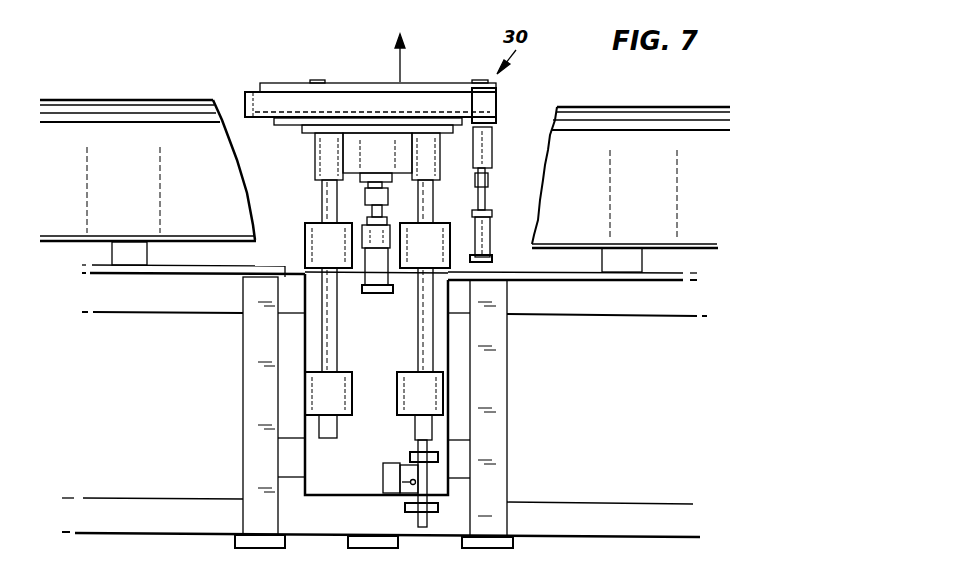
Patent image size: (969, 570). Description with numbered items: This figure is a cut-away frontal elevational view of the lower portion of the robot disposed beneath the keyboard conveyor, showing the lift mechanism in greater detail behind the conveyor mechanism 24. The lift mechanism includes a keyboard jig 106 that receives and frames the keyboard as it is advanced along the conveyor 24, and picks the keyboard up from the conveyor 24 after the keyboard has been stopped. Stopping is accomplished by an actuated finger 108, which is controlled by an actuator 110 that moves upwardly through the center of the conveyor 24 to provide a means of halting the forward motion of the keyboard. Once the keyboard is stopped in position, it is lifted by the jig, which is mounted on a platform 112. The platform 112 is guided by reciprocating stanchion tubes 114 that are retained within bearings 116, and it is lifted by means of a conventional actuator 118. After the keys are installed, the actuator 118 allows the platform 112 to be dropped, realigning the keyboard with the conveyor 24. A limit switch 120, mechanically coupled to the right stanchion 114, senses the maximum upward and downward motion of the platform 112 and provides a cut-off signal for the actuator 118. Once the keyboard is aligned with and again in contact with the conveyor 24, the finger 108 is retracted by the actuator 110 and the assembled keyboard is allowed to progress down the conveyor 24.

The conveyor mechanism 24 is at (102, 142).
The keyboard jig 106 is at (273, 97).
The actuated finger 108 is at (495, 130).
The actuator 110 is at (487, 232).
The platform 112 is at (293, 127).
The reciprocating stanchion tubes 114 is at (327, 307).
The bearings 116 is at (313, 232).
The actuator 118 is at (373, 295).
The limit switch 120 is at (378, 483).